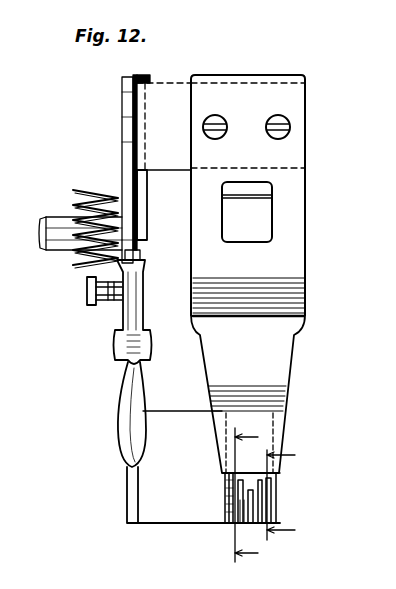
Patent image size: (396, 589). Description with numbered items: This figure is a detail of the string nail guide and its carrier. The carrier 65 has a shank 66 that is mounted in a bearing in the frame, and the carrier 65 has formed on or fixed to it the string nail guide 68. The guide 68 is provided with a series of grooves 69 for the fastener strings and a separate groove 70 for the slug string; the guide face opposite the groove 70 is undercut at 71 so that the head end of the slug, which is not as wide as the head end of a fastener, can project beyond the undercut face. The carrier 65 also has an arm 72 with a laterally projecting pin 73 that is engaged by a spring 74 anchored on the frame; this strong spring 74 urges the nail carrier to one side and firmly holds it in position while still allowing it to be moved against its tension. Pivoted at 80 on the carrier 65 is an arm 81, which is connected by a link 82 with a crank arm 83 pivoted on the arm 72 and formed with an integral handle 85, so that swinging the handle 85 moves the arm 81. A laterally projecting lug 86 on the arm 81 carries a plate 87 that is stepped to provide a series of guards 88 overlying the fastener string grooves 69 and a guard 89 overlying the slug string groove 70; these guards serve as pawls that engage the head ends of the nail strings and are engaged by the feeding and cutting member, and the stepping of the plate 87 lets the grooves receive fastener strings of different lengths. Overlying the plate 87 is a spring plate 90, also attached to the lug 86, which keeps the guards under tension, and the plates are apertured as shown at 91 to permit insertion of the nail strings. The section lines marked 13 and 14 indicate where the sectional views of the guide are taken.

The section line 13- 13 is at (259, 496).
The section line 14- 14 is at (294, 493).
The carrier 65 is at (128, 505).
The shank 66 is at (57, 218).
The string nail guide 68 is at (270, 486).
The grooves 69 is at (241, 518).
The groove 70 is at (262, 501).
The undercut 71 is at (256, 510).
The arm 72 is at (140, 270).
The pin 73 is at (88, 292).
The spring 74 is at (70, 250).
The pivot 80 is at (130, 183).
The arm 81 is at (143, 198).
The link 82 is at (125, 118).
The crank arm 83 is at (125, 370).
The handle 85 is at (132, 435).
The lug 86 is at (170, 95).
The plate 87 is at (283, 360).
The guards 88 is at (244, 488).
The guard 89 is at (288, 478).
The spring plate 90 is at (298, 228).
The apertures 91 is at (226, 227).